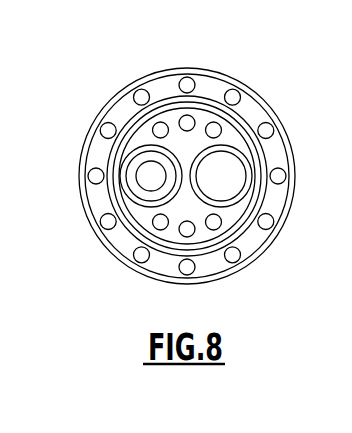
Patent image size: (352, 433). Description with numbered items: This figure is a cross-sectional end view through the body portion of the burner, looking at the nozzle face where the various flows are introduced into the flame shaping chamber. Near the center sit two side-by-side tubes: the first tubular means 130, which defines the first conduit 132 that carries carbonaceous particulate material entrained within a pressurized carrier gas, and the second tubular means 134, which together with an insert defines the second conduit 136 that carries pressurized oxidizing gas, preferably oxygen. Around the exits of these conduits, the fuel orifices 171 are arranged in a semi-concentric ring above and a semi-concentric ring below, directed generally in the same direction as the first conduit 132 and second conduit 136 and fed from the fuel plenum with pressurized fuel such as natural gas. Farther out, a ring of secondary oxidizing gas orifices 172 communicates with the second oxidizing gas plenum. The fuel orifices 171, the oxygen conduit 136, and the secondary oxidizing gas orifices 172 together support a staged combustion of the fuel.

The first tubular means 130 is at (256, 254).
The first conduit 132 is at (238, 175).
The second tubular means 134 is at (137, 143).
The second conduit 136 is at (148, 186).
The fuel orifices 171 is at (161, 230).
The secondary oxidizing gas orifices 172 is at (150, 70).